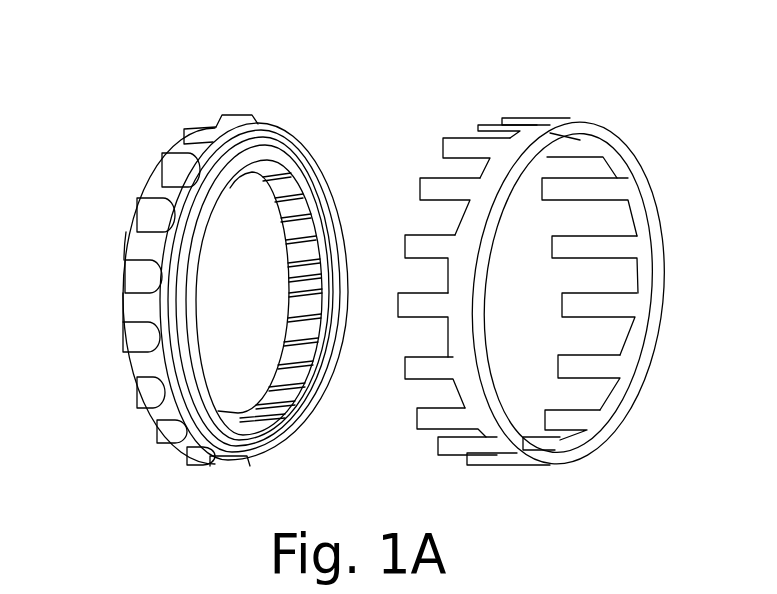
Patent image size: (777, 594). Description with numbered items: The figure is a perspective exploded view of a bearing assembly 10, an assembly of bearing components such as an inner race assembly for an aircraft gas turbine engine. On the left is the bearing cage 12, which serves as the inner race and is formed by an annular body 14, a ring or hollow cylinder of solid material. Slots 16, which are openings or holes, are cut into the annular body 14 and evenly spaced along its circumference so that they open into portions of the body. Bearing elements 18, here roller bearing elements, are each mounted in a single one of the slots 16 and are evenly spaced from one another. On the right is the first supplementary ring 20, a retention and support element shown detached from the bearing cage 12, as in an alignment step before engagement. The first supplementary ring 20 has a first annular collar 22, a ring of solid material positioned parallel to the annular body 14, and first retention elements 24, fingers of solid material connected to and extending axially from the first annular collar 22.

The bearing assembly 10 is at (125, 108).
The bearing cage 12 is at (258, 122).
The annular body 14 is at (142, 189).
The slots 16 is at (128, 236).
The bearing elements 18 is at (136, 272).
The first supplementary ring 20 is at (580, 119).
The first annular collar 22 is at (627, 190).
The first retention elements 24 is at (460, 135).